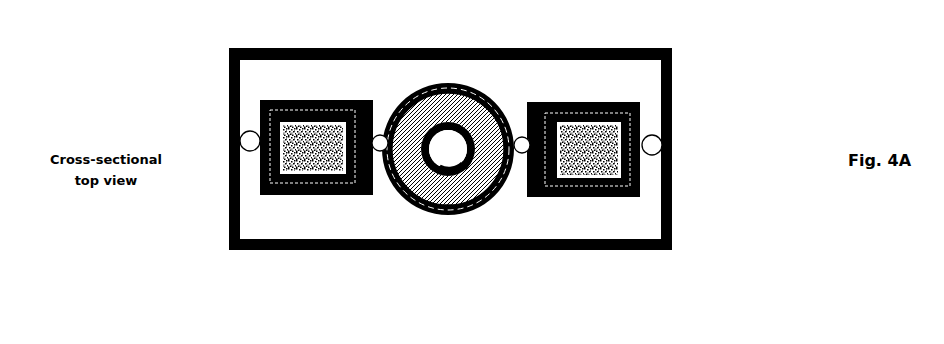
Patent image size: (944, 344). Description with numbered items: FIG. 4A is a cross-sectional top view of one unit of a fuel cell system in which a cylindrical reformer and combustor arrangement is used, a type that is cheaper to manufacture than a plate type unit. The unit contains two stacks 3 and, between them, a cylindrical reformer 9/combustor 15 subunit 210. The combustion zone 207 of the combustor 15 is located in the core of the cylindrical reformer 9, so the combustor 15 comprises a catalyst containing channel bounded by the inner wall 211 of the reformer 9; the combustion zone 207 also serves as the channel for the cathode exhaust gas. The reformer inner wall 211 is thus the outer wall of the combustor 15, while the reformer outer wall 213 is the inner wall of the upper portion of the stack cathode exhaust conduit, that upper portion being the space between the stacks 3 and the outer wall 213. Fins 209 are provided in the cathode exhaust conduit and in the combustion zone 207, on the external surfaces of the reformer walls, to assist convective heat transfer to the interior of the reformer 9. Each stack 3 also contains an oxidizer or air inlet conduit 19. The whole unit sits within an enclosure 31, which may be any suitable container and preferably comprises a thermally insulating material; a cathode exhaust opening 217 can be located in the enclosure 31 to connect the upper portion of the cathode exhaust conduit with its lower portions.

The stack 3 is at (296, 157).
The reformer 9 is at (445, 200).
The combustor 15 is at (450, 160).
The oxidizer inlet conduit 19 is at (233, 140).
The enclosure 31 is at (681, 103).
The combustion zone 207 is at (445, 140).
The fins 209 is at (470, 127).
The cylindrical reformer/combustor subunit 210 is at (461, 214).
The inner wall 211 is at (430, 118).
The outer wall 213 is at (401, 110).
The cathode exhaust opening 217 is at (367, 157).